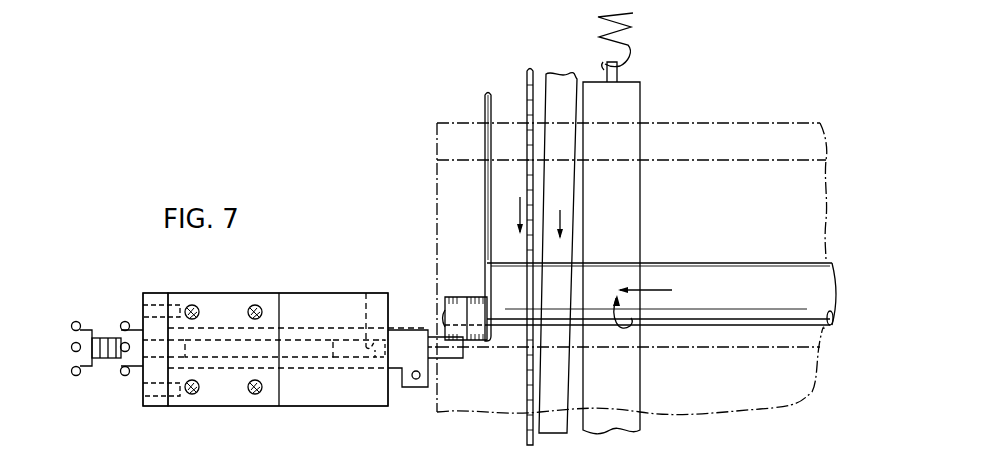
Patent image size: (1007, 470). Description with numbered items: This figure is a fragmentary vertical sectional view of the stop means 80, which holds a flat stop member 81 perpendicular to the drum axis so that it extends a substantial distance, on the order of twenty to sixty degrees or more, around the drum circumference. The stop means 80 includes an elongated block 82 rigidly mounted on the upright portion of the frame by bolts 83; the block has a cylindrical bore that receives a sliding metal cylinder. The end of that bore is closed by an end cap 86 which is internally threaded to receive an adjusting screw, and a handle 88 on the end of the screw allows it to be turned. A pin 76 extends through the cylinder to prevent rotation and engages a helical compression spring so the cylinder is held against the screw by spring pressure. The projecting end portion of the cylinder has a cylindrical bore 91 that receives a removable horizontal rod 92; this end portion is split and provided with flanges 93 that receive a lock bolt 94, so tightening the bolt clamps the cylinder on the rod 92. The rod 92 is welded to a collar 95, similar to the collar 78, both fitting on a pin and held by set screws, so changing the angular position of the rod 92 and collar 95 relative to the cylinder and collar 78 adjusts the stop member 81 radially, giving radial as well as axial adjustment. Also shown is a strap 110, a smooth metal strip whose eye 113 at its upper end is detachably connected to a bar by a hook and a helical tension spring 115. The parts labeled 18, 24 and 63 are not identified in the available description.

The chain 18 is at (528, 84).
The housing 24 is at (438, 216).
The plate 63 is at (565, 186).
The pin 76 is at (196, 348).
The collar 78 is at (472, 342).
The stop means 80 is at (134, 290).
The stop member 81 is at (486, 186).
The elongated block 82 is at (292, 293).
The bolts 83 is at (200, 303).
The end cap 86 is at (157, 300).
The handle 88 is at (75, 333).
The cylindrical bore 91 is at (366, 292).
The horizontal rod 92 is at (462, 360).
The flanges 93 is at (422, 390).
The lock bolt 94 is at (413, 380).
The collar 95 is at (446, 300).
The strap 110 is at (632, 218).
The eye 113 is at (618, 74).
The helical tension spring 115 is at (634, 15).